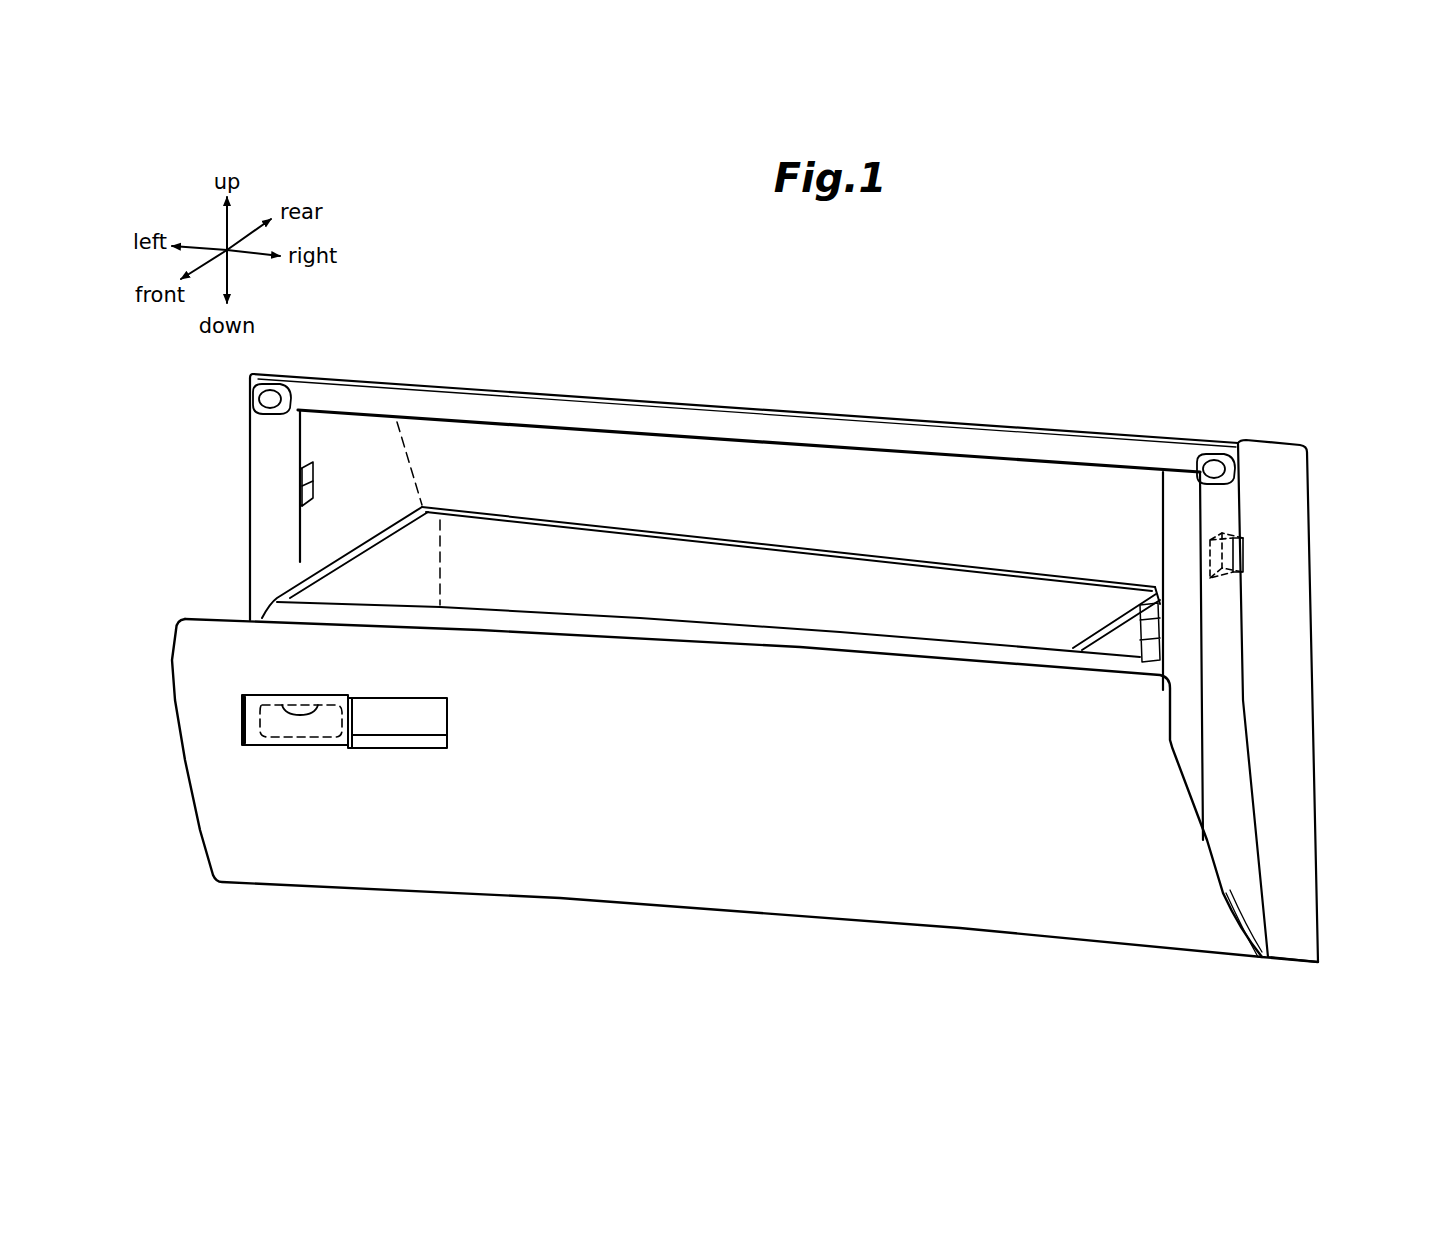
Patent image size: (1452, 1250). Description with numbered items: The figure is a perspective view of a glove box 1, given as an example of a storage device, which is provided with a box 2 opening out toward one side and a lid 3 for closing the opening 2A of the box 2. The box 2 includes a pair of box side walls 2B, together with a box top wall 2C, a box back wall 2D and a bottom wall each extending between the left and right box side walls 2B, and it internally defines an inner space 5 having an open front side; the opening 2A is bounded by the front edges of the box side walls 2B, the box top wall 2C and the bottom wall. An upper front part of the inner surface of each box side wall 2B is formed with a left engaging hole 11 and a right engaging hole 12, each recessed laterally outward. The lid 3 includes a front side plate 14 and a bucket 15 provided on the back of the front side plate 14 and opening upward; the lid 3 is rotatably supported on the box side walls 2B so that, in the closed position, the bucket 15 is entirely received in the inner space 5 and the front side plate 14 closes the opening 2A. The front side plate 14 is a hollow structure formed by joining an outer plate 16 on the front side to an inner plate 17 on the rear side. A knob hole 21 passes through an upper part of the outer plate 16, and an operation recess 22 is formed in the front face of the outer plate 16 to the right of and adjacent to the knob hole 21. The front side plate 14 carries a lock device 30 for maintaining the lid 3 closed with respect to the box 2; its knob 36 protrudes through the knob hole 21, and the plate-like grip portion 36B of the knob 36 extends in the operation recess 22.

The glove box 1 is at (1128, 321).
The box 2 is at (888, 414).
The opening 2A is at (566, 436).
The box side walls 2B is at (345, 437).
The box top wall 2C is at (1020, 448).
The box back wall 2D is at (513, 445).
The lid 3 is at (624, 920).
The inner space 5 is at (867, 517).
The left engaging hole 11 is at (312, 465).
The right engaging hole 12 is at (1244, 557).
The front side plate 14 is at (913, 1000).
The bucket 15 is at (620, 565).
The outer plate 16 is at (797, 882).
The inner plate 17 is at (917, 648).
The knob hole 21 is at (300, 712).
The operation recess 22 is at (418, 728).
The lock device 30 is at (293, 755).
The knob 36 is at (253, 749).
The grip portion 36B is at (325, 725).